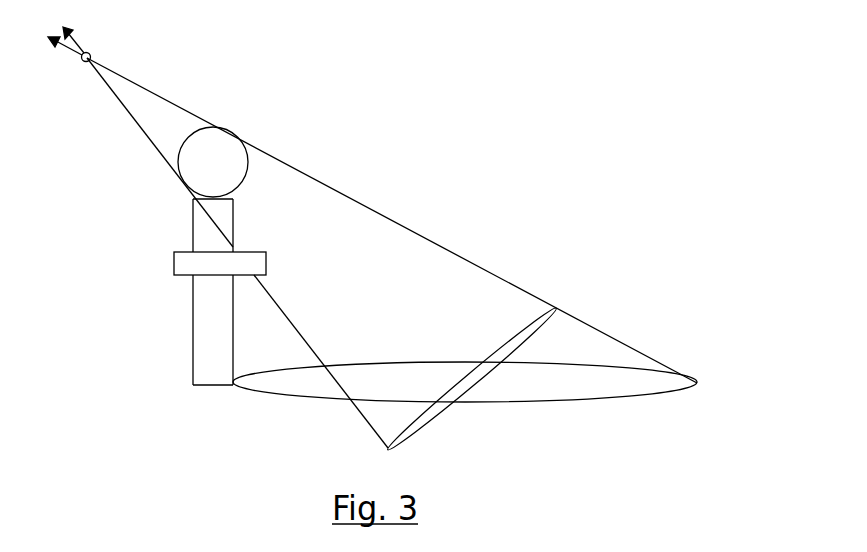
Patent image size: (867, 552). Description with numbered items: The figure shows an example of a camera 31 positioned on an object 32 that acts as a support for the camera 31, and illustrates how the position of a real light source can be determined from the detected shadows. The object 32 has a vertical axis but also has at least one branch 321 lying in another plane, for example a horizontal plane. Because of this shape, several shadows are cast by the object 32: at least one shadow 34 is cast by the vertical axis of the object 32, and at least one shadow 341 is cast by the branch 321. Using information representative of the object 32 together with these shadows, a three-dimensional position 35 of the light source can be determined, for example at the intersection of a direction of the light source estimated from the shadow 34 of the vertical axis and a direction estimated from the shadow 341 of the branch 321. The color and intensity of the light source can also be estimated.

The camera 31 is at (223, 148).
The object 32 is at (205, 323).
The branch 321 is at (258, 265).
The shadow 34 is at (598, 387).
The shadow 341 is at (529, 333).
The 3D position 35 is at (91, 54).